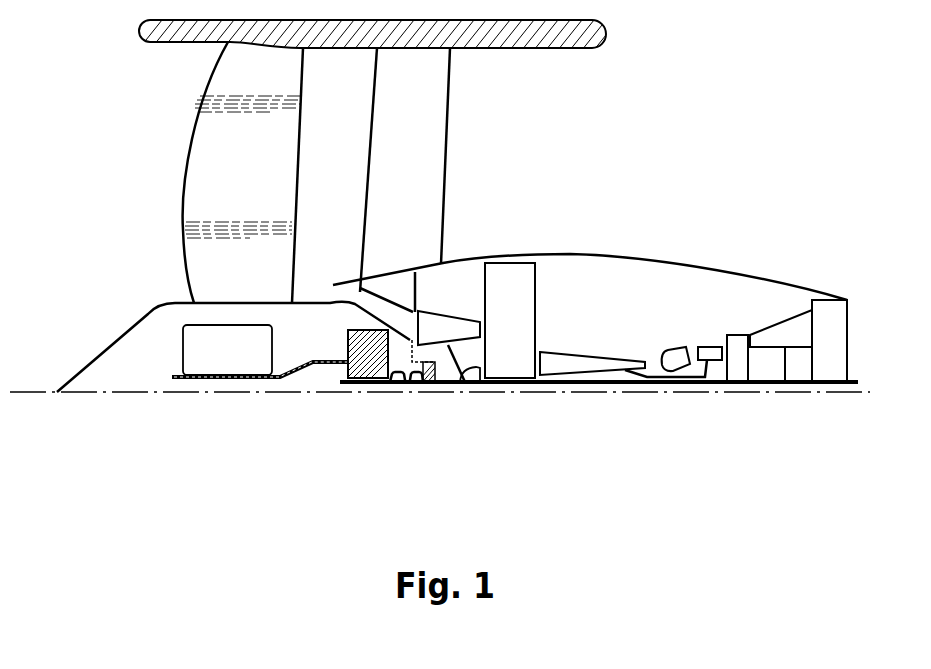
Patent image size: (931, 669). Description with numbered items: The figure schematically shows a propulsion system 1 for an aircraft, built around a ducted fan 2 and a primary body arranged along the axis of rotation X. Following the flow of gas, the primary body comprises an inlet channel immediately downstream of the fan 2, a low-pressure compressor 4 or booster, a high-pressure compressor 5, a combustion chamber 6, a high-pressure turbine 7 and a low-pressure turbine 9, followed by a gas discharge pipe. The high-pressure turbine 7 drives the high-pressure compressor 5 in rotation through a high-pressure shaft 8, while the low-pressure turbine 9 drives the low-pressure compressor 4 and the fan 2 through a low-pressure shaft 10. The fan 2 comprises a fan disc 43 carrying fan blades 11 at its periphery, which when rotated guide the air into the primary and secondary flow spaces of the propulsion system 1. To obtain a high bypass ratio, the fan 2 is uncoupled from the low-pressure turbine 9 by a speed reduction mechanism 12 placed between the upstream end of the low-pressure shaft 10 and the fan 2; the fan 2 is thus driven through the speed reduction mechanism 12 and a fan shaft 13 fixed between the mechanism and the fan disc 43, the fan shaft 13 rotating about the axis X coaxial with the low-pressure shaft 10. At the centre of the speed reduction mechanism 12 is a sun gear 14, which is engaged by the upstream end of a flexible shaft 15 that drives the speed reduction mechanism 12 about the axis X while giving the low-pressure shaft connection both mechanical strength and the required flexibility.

The propulsion system 1 is at (727, 244).
The fan 2 is at (136, 261).
The low-pressure compressor 4 is at (449, 328).
The high-pressure compressor 5 is at (623, 364).
The combustion chamber 6 is at (670, 363).
The high-pressure turbine 7 is at (715, 360).
The high-pressure shaft 8 is at (482, 385).
The low-pressure turbine 9 is at (781, 346).
The low-pressure shaft 10 is at (447, 385).
The fan blades 11 is at (243, 172).
The speed reduction mechanism 12 is at (370, 362).
The fan shaft 13 is at (202, 380).
The sun gear 14 is at (343, 382).
The flexible shaft 15 is at (398, 385).
The fan disc 43 is at (228, 303).
The axis of rotation X is at (440, 428).